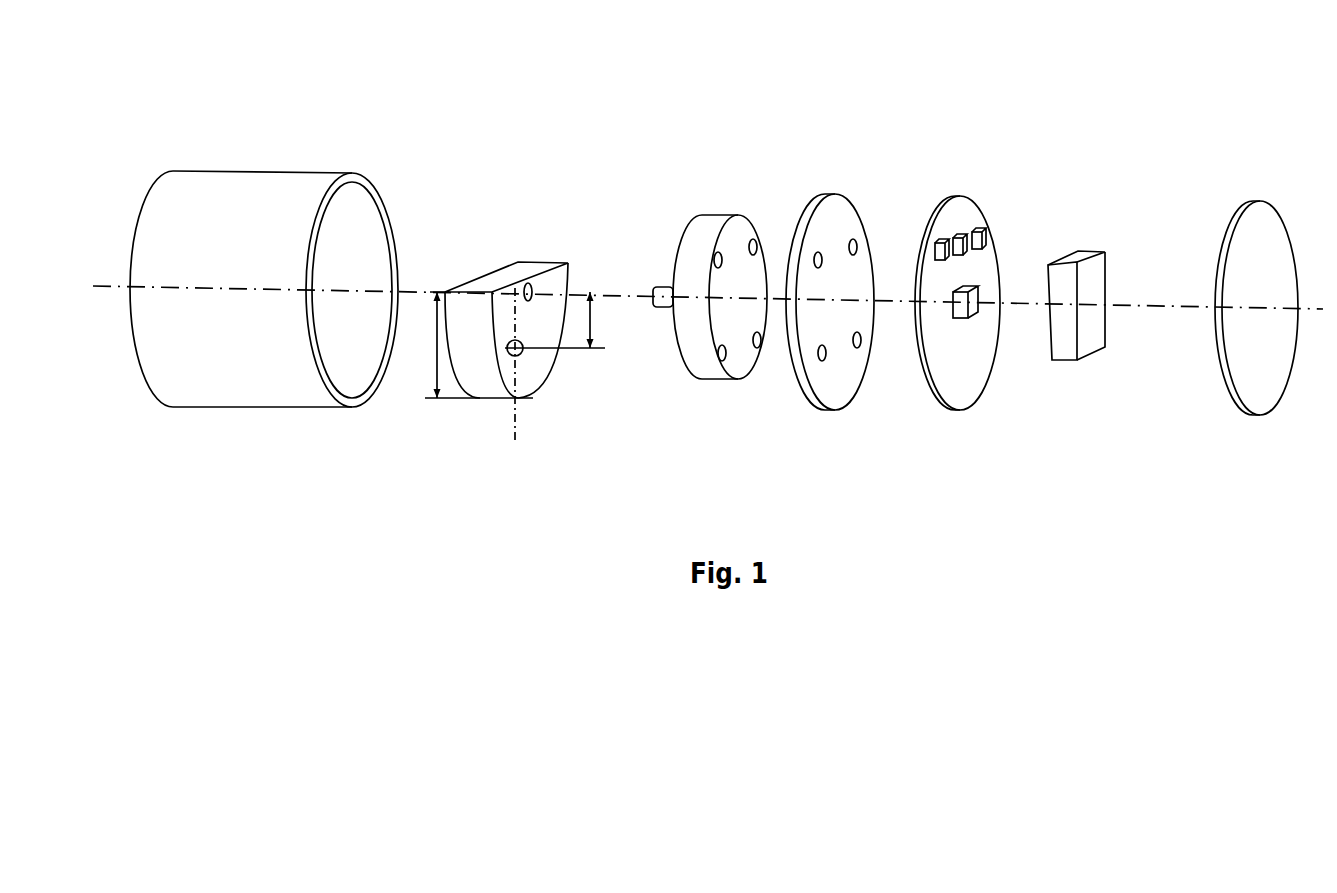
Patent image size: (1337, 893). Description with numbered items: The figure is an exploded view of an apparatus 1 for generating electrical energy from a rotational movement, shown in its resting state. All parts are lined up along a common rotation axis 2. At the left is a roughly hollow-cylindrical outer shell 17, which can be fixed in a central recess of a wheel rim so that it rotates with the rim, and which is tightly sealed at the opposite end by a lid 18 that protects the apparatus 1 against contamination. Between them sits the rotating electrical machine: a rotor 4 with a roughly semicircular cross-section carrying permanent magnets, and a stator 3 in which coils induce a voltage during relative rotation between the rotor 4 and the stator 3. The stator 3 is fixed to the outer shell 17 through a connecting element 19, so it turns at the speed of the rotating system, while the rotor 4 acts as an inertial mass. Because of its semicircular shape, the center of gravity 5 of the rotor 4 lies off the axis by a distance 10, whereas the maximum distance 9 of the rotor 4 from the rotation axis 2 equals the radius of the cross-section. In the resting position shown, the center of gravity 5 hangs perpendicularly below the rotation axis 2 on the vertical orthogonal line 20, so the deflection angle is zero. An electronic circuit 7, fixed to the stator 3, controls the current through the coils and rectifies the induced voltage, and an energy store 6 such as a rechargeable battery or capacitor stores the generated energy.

The apparatus 1 is at (690, 85).
The rotation axis 2 is at (412, 292).
The stator 3 is at (685, 351).
The rotor 4 is at (464, 370).
The center of gravity 5 is at (522, 353).
The energy store 6 is at (1085, 338).
The circuit 7 is at (968, 350).
The maximum distance 9 is at (436, 352).
The distance 10 is at (592, 327).
The outer shell 17 is at (252, 223).
The lid 18 is at (1278, 361).
The connecting element 19 is at (808, 338).
The orthogonal line 20 is at (520, 417).